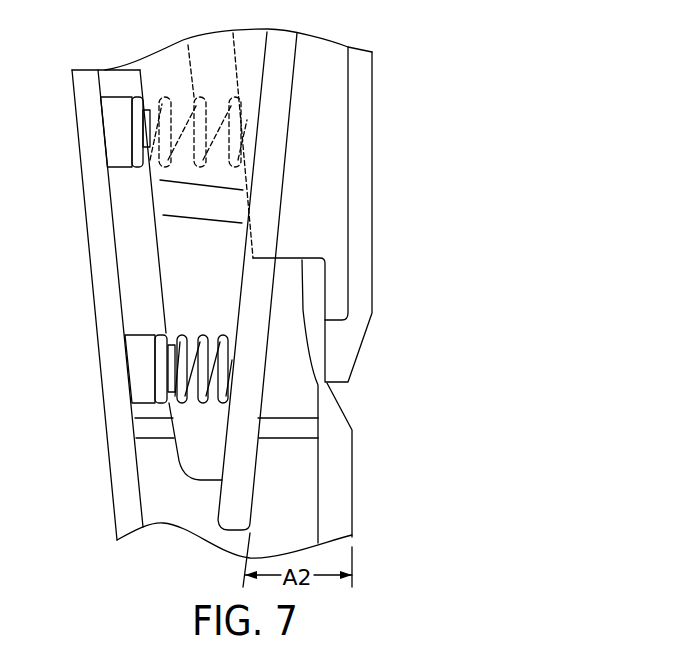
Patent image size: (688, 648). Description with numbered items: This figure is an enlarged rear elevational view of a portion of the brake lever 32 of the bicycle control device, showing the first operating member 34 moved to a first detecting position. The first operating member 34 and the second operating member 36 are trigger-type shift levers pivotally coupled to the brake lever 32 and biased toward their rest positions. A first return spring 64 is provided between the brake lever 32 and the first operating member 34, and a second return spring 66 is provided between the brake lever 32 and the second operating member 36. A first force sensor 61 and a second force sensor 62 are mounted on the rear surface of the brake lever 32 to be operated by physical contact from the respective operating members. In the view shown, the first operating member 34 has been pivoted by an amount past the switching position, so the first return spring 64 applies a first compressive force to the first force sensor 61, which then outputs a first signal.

The brake lever 32 is at (113, 481).
The first operating member 34 is at (252, 497).
The second operating member 36 is at (373, 152).
The first force sensor 61 is at (145, 328).
The second force sensor 62 is at (122, 92).
The first return spring 64 is at (203, 333).
The second return spring 66 is at (188, 45).